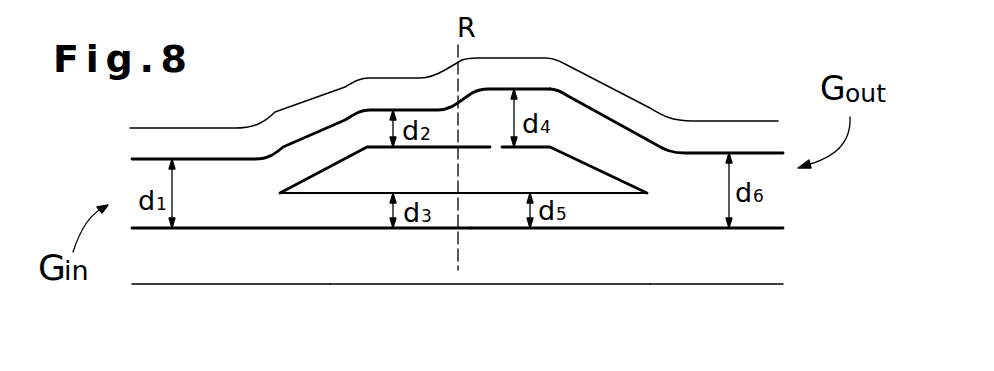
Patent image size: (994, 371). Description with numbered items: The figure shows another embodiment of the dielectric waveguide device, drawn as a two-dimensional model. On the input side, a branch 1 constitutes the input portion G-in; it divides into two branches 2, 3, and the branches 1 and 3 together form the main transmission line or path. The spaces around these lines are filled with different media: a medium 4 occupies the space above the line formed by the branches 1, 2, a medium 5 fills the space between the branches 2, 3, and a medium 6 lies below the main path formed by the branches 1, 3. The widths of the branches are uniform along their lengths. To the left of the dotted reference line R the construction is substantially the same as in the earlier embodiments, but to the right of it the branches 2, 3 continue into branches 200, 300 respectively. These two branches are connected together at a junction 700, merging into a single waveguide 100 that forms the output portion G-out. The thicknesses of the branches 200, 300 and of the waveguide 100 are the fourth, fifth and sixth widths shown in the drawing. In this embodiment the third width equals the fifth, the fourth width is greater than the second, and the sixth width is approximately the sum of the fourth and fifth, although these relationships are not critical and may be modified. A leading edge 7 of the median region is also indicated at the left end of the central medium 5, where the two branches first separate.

The branch 1 is at (210, 207).
The branch 2 is at (313, 153).
The branch 3 is at (342, 213).
The medium 4 is at (383, 88).
The medium 5 is at (490, 175).
The medium 6 is at (427, 272).
The leading edge of insert 7 is at (280, 202).
The waveguide 100 is at (767, 212).
The branch 200 is at (597, 138).
The branch 300 is at (608, 207).
The junction 700 is at (653, 204).